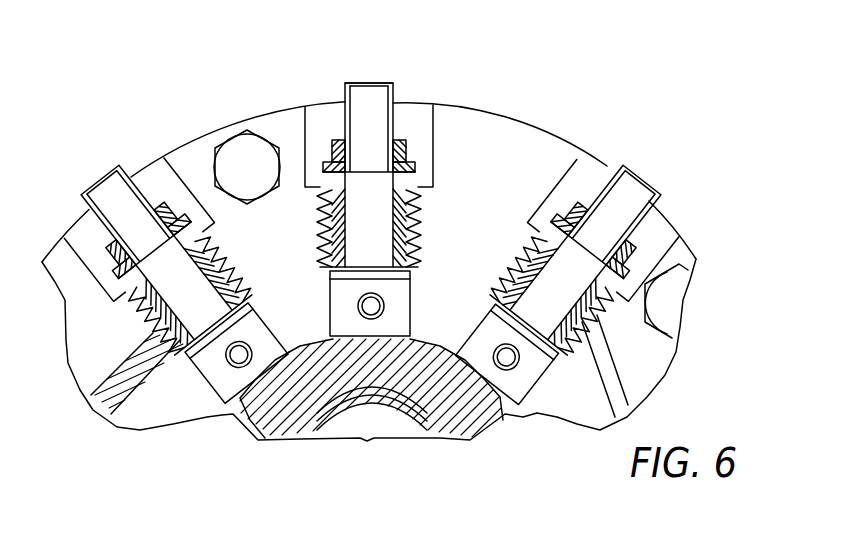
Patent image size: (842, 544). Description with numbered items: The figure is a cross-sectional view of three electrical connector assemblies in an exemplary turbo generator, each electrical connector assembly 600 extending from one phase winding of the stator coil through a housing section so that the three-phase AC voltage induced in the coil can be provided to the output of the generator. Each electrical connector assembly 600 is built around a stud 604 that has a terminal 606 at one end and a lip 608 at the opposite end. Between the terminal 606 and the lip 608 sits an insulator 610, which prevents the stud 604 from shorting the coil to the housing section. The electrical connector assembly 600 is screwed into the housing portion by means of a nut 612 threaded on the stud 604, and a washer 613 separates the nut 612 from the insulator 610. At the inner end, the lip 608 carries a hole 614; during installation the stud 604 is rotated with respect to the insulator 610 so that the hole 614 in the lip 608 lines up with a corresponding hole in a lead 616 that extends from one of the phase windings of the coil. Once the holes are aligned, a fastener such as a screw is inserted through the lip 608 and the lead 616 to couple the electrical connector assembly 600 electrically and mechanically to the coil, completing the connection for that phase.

The electrical connector assembly 600 is at (477, 63).
The stud 604 is at (344, 113).
The terminal 606 is at (363, 82).
The lip 608 is at (398, 345).
The insulator 610 is at (322, 184).
The nut 612 is at (332, 158).
The washer 613 is at (413, 166).
The hole 614 is at (360, 307).
The lead 616 is at (402, 334).